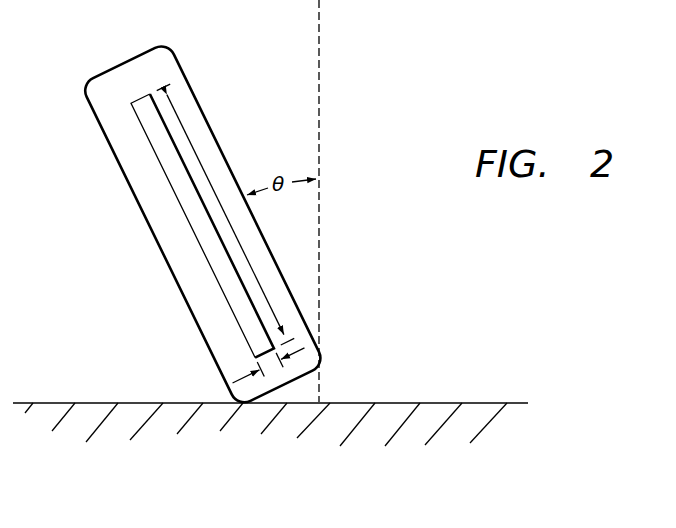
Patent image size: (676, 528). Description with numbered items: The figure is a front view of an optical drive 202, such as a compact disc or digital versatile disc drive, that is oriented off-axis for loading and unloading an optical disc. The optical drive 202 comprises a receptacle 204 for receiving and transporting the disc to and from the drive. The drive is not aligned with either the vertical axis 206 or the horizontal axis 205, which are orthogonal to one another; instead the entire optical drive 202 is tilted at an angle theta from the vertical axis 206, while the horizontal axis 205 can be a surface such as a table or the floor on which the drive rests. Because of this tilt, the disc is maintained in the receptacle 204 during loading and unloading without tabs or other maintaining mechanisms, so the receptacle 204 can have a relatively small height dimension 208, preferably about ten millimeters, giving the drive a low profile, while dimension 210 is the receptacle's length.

The optical drive 202 is at (122, 60).
The receptacle 204 is at (162, 163).
The horizontal axis 205 is at (438, 399).
The vertical axis 206 is at (321, 59).
The height dimension 208 is at (271, 367).
The length dimension 210 is at (193, 152).